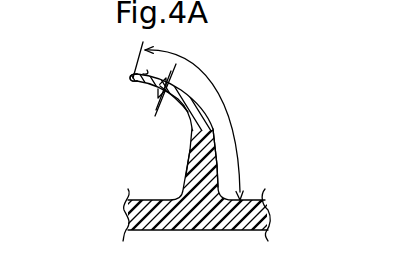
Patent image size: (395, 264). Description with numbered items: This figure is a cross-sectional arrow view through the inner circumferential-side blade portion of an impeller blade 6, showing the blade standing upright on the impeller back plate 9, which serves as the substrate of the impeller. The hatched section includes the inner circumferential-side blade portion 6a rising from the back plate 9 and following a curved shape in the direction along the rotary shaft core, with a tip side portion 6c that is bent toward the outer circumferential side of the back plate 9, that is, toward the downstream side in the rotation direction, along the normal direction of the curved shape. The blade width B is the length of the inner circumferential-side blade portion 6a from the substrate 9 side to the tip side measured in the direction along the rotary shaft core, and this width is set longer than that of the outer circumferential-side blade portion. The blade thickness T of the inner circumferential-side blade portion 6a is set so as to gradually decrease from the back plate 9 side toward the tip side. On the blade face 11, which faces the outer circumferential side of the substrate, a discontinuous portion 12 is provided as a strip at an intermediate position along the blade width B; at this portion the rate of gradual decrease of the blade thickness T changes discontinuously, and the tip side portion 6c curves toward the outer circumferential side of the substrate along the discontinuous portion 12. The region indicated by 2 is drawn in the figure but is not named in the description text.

The overlapping portion / joint 2 is at (100, 128).
The impeller blade 6 is at (219, 155).
The inner circumferential-side blade portion 6a is at (215, 158).
The tip side portion 6c is at (145, 71).
The impeller back plate 9 is at (128, 217).
The blade face 11 is at (181, 140).
The discontinuous portion 12 is at (184, 120).
The blade thickness T is at (157, 91).
The blade width B is at (193, 121).